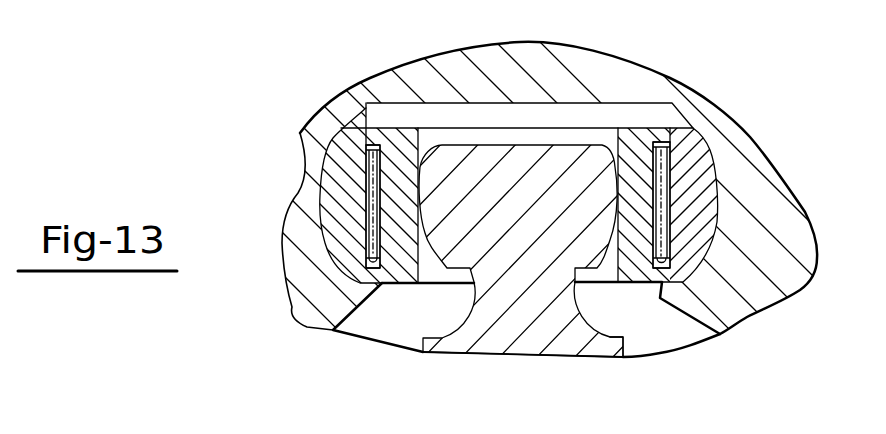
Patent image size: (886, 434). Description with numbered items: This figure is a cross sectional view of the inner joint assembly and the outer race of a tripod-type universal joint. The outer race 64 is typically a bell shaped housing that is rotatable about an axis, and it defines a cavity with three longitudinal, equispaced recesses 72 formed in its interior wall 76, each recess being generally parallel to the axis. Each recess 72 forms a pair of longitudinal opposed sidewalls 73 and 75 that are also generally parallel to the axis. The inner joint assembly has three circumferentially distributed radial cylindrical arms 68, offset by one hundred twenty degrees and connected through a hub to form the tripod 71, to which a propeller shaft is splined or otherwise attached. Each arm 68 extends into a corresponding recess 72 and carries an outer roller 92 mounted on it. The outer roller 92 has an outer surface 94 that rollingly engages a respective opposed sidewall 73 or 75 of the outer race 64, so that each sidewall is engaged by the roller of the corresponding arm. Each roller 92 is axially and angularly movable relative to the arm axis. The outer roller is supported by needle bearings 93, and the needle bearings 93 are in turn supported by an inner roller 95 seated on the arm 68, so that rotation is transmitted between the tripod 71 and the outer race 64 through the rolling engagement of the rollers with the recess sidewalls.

The outer race 64 is at (690, 298).
The radial cylindrical arm 68 is at (523, 152).
The tripod 71 is at (616, 348).
The recess 72 is at (607, 117).
The sidewall 73 is at (710, 143).
The sidewall 75 is at (316, 284).
The interior wall 76 is at (347, 308).
The outer roller 92 is at (337, 200).
The needle bearing 93 is at (363, 170).
The outer surface 94 is at (800, 200).
The inner roller 95 is at (368, 115).